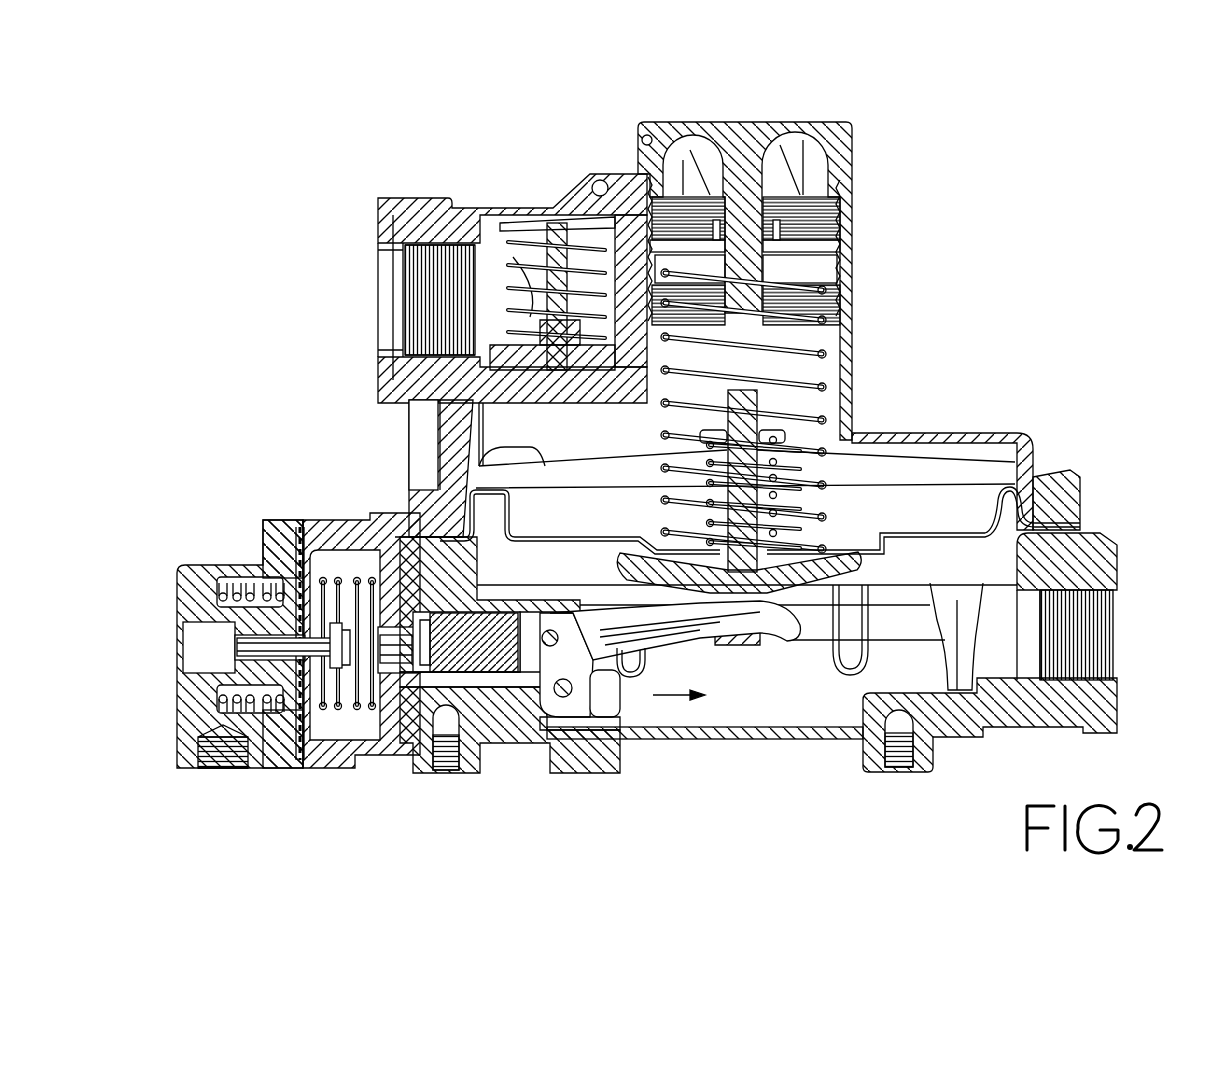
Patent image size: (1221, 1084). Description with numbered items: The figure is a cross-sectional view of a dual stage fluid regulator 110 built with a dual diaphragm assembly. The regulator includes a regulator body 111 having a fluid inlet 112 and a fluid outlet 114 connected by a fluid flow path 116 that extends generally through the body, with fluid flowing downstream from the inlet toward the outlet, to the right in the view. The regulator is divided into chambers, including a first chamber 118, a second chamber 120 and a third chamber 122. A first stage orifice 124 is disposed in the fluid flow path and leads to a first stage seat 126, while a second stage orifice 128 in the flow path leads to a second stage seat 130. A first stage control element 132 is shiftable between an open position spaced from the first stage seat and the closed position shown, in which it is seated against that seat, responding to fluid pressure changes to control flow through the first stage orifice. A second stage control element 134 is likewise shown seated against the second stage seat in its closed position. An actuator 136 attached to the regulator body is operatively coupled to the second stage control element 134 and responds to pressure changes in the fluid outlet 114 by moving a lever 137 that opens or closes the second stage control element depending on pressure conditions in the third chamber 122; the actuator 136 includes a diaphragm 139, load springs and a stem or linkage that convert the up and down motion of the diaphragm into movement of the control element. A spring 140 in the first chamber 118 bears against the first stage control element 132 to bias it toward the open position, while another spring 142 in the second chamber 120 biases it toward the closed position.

The dual stage fluid regulator 110 is at (913, 285).
The regulator body 111 is at (385, 560).
The fluid inlet 112 is at (183, 648).
The fluid outlet 114 is at (1110, 625).
The fluid flow path 116 is at (670, 697).
The first chamber 118 is at (242, 582).
The second chamber 120 is at (348, 575).
The third chamber 122 is at (780, 707).
The first stage orifice 124 is at (293, 640).
The first stage seat 126 is at (315, 550).
The second stage orifice 128 is at (405, 655).
The second stage seat 130 is at (452, 640).
The first stage control element 132 is at (350, 645).
The second stage control element 134 is at (460, 640).
The actuator 136 is at (907, 360).
The lever 137 is at (693, 623).
The diaphragm 139 is at (937, 530).
The spring 140 is at (257, 710).
The spring 142 is at (365, 660).